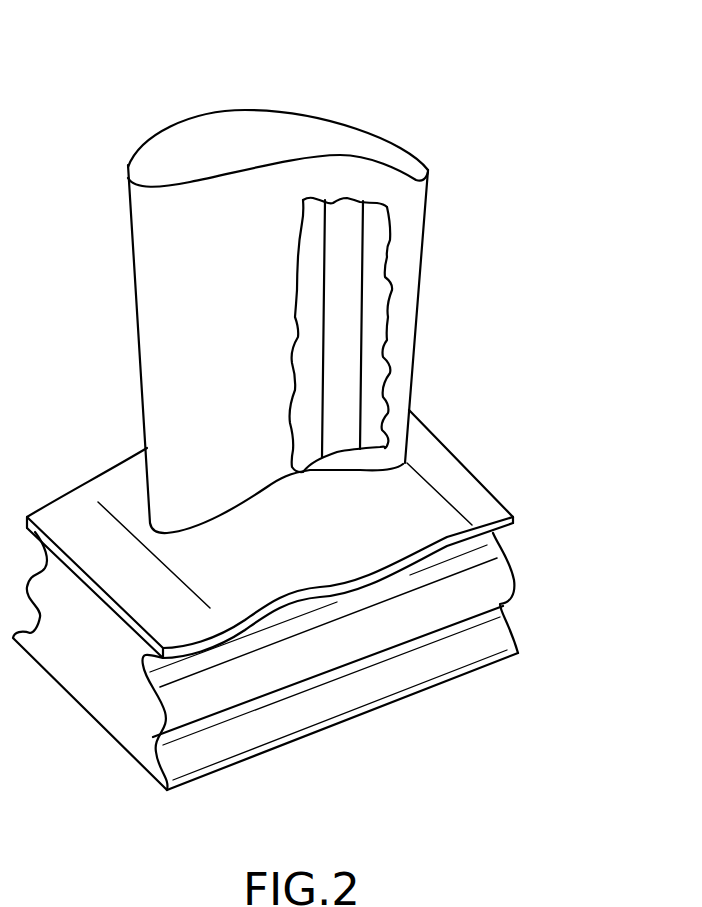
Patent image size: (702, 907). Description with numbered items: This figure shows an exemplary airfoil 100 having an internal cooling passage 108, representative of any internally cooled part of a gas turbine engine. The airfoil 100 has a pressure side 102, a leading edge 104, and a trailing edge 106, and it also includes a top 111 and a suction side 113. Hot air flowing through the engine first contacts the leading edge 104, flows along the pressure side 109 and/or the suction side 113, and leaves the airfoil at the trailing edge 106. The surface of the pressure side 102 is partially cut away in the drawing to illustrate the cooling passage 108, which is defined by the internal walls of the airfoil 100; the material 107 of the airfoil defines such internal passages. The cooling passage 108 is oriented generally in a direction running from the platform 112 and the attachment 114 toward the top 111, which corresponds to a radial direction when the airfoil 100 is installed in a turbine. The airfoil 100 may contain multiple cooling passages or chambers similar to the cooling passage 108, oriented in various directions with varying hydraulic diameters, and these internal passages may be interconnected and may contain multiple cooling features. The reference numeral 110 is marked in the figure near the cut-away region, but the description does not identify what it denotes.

The airfoil 100 is at (482, 131).
The pressure side 102 is at (187, 255).
The leading edge 104 is at (135, 305).
The trailing edge 106 is at (418, 289).
The material 107 is at (380, 373).
The cooling passage 108 is at (352, 243).
The pressure side 109 is at (267, 200).
The cladding top edge 110 is at (360, 207).
The top 111 is at (207, 130).
The platform 112 is at (460, 502).
The suction side 113 is at (265, 107).
The attachment 114 is at (493, 633).